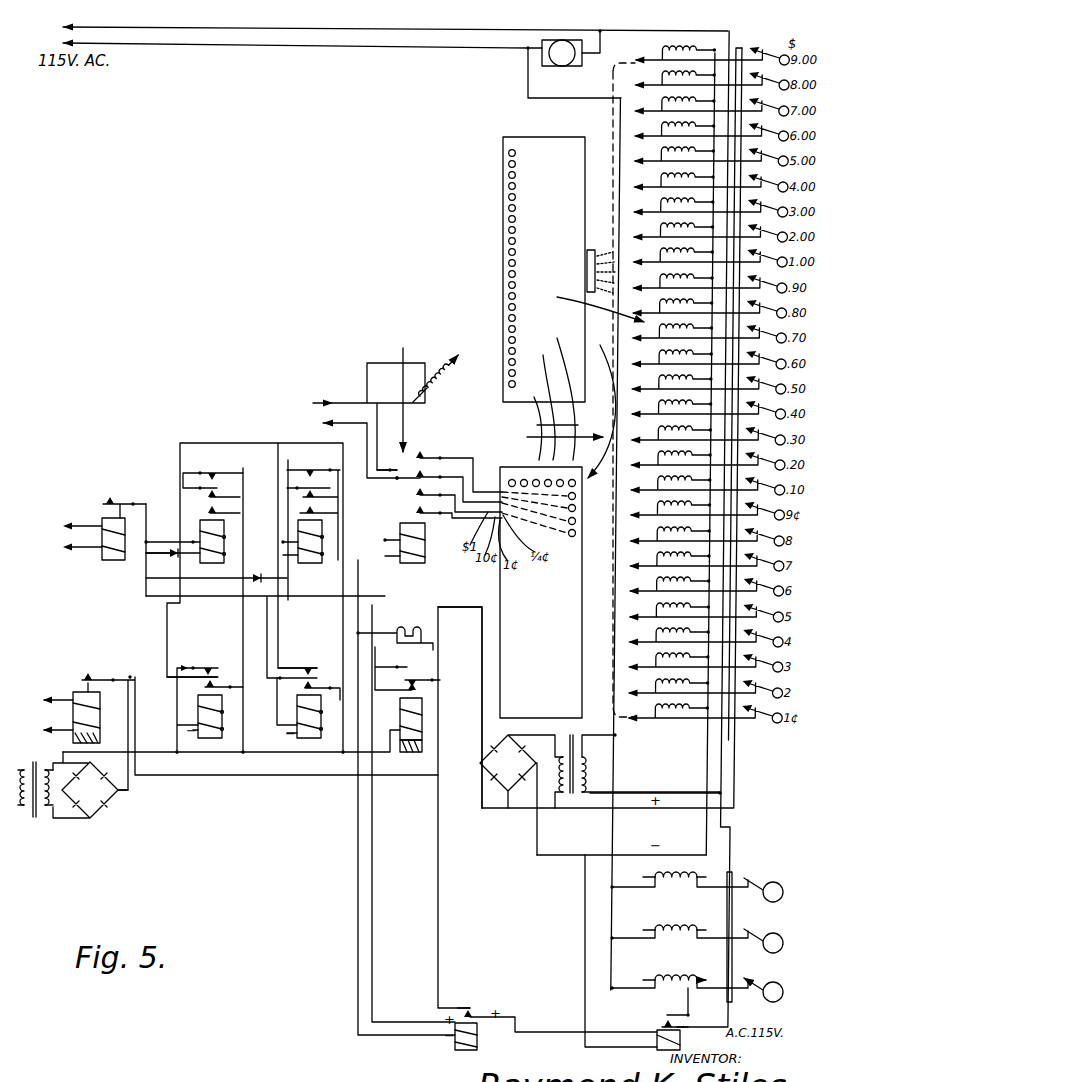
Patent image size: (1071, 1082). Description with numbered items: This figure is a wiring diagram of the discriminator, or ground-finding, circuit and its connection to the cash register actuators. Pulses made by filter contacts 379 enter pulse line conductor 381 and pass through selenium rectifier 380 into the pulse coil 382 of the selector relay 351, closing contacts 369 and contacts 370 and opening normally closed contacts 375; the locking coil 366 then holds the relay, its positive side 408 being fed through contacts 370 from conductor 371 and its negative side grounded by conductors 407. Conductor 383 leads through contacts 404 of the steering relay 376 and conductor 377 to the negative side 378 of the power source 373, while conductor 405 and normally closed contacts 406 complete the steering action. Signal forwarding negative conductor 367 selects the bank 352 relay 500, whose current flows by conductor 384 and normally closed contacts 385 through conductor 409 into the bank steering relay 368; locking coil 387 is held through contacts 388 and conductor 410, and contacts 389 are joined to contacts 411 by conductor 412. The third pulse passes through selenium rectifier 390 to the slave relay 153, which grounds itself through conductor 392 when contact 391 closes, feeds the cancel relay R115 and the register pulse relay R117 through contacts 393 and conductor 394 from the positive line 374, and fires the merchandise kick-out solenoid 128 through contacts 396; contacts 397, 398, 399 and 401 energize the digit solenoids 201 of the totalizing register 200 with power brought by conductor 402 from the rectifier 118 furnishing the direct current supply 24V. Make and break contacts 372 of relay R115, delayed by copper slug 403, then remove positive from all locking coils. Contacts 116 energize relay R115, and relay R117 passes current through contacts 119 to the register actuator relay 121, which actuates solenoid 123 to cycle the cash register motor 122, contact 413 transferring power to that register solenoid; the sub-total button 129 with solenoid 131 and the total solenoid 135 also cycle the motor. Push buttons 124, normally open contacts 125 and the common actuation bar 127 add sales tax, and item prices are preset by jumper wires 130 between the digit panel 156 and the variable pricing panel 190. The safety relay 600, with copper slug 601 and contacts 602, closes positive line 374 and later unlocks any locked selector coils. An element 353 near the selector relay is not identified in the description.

The cash register motor 122 is at (563, 67).
The push buttons 124 is at (762, 45).
The normally open contacts 125 is at (739, 45).
The common actuation bar 127 is at (727, 46).
The totalizing register 200 is at (640, 272).
The digit solenoids 201 is at (591, 301).
The variable pricing panel 190 is at (562, 330).
The digit panel 156 is at (556, 607).
The jumper wires 130 is at (532, 437).
The slave relay 153 is at (393, 521).
The merchandise kick-out solenoid 128 is at (444, 392).
The conductor 392 is at (433, 490).
The contacts 116 is at (383, 395).
The third set of contacts 396 is at (397, 455).
The normally open contacts 393 is at (404, 442).
The normally open contact 391 is at (405, 510).
The fourth set of contacts 397 is at (428, 477).
The fifth set of contacts 398 is at (428, 495).
The sixth set of contacts 399 is at (430, 513).
The seventh set of contacts 401 is at (470, 508).
The bank 352 is at (318, 390).
The filter contacts 379 is at (105, 497).
The selenium rectifier 380 is at (163, 538).
The pulse line conductor 381 is at (186, 552).
The selector relay 351 is at (198, 518).
The conductor 383 is at (184, 478).
The normally closed contacts 375 is at (207, 463).
The contacts 370 is at (243, 455).
The relay coil 353 is at (195, 566).
The pulse coil 382 is at (261, 558).
The locking coil 387 is at (322, 565).
The locking coil 366 is at (226, 540).
The signal forwarding negative line conductor 367 is at (262, 569).
The contacts 369 is at (221, 513).
The positive side of locking coil 408 is at (236, 507).
The contacts 389 is at (284, 478).
The bank relay 500 is at (299, 503).
The conductor 384 is at (289, 472).
The normally closed contacts 385 is at (320, 469).
The contacts 388 is at (313, 496).
The conductor 410 is at (322, 507).
The conductor 371 is at (265, 444).
The conductor 405 is at (165, 650).
The normally closed contacts 406 is at (206, 662).
The contacts 404 is at (222, 683).
The conductors 407 is at (258, 680).
The conductor 412 is at (292, 636).
The conductor 409 is at (338, 635).
The contacts 411 is at (307, 664).
The steering relay 376 is at (208, 742).
The bank steering relay 368 is at (307, 742).
The conductor 377 is at (170, 760).
The conductor 374 is at (155, 715).
The safety relay 600 is at (72, 682).
The normally open contacts 602 is at (92, 674).
The copper slug 601 is at (108, 736).
The power source 373 is at (97, 823).
The negative side of power source 378 is at (65, 805).
The conductor 394 is at (415, 1022).
The selenium rectifier 390 is at (377, 586).
The conductor 402 is at (441, 573).
The contacts 372 is at (420, 676).
The copper slug 403 is at (400, 738).
The cancel relay R115 is at (418, 761).
The rectifier 118 is at (508, 793).
The A.C. solenoid 131 is at (683, 927).
The total solenoid 135 is at (786, 878).
The sub-total button 129 is at (785, 931).
The contact 413 is at (668, 1016).
The solenoid 123 is at (645, 972).
The register actuator relay 121 is at (650, 1025).
The contacts 119 is at (476, 1003).
The register pulse relay R117 is at (458, 1007).
The 24V DC supply 24V is at (745, 728).